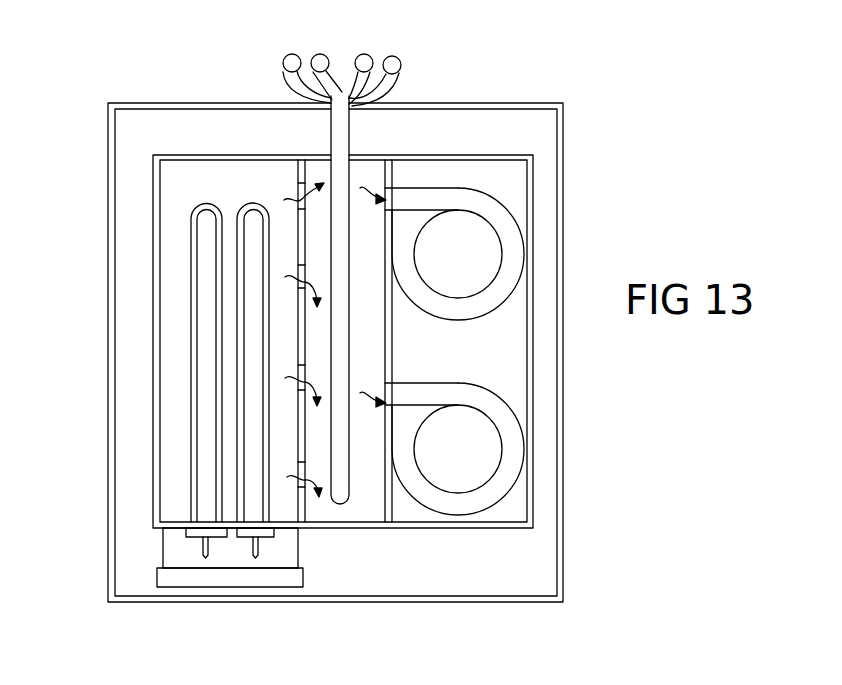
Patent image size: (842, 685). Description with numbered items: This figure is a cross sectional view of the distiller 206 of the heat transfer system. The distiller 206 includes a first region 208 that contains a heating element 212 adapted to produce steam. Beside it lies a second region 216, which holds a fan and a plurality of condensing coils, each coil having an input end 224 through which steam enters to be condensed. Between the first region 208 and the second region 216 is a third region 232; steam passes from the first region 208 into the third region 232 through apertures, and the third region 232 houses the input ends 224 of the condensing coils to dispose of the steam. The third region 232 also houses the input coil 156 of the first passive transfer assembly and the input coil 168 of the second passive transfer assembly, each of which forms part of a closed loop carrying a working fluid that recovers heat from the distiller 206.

The distiller 206 is at (129, 104).
The first region 208 is at (183, 185).
The heating element 212 is at (197, 273).
The second region 216 is at (507, 350).
The input end 224 is at (410, 193).
The third region 232 is at (367, 470).
The input coil 156 is at (317, 55).
The input coil 168 is at (368, 55).